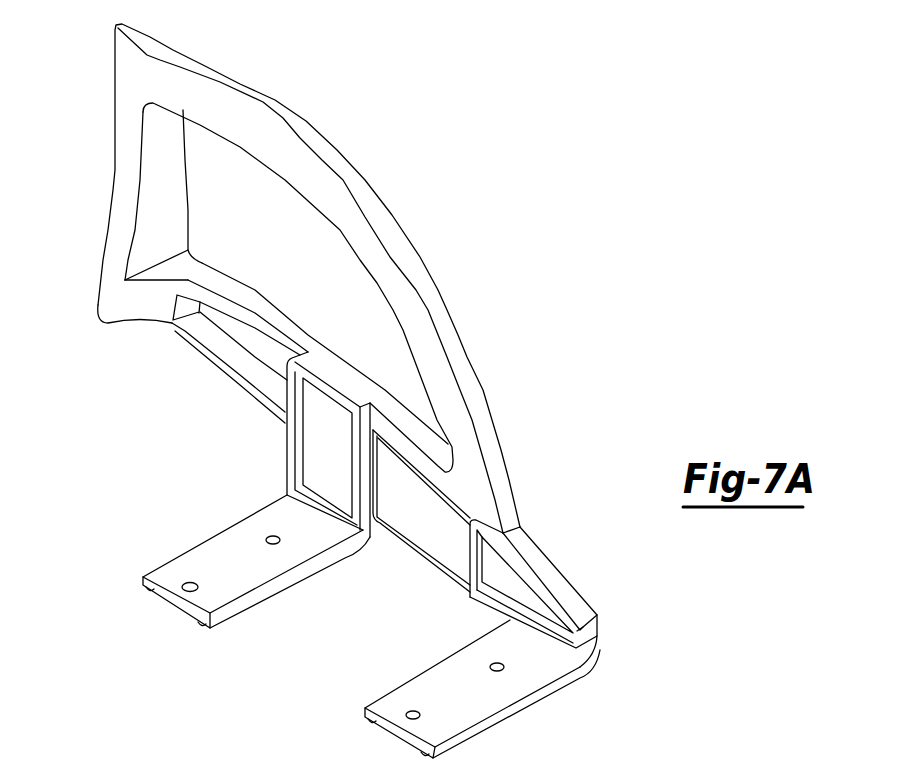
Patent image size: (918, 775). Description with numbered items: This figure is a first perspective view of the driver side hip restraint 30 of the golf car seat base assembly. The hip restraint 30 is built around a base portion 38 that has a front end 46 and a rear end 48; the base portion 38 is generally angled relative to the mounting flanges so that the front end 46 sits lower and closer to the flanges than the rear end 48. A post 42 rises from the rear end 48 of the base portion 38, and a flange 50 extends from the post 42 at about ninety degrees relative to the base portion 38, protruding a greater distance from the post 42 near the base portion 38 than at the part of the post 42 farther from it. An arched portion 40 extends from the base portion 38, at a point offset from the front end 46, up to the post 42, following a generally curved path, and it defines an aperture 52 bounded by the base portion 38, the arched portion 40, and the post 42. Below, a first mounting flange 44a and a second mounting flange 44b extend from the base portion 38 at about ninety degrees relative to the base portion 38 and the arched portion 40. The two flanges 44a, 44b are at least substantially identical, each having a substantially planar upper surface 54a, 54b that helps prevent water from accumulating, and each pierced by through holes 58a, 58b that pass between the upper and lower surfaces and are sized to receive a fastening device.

The driver side hip restraint 30 is at (450, 188).
The base portion 38 is at (427, 530).
The arched portion 40 is at (273, 137).
The post 42 is at (115, 172).
The first mounting flange 44a is at (166, 568).
The second mounting flange 44b is at (383, 705).
The front end 46 is at (580, 606).
The rear end 48 is at (195, 318).
The flange 50 is at (100, 284).
The aperture 52 is at (305, 199).
The upper surface 54a is at (250, 578).
The upper surface 54b is at (487, 693).
The through holes 58a is at (268, 536).
The through holes 58b is at (493, 665).